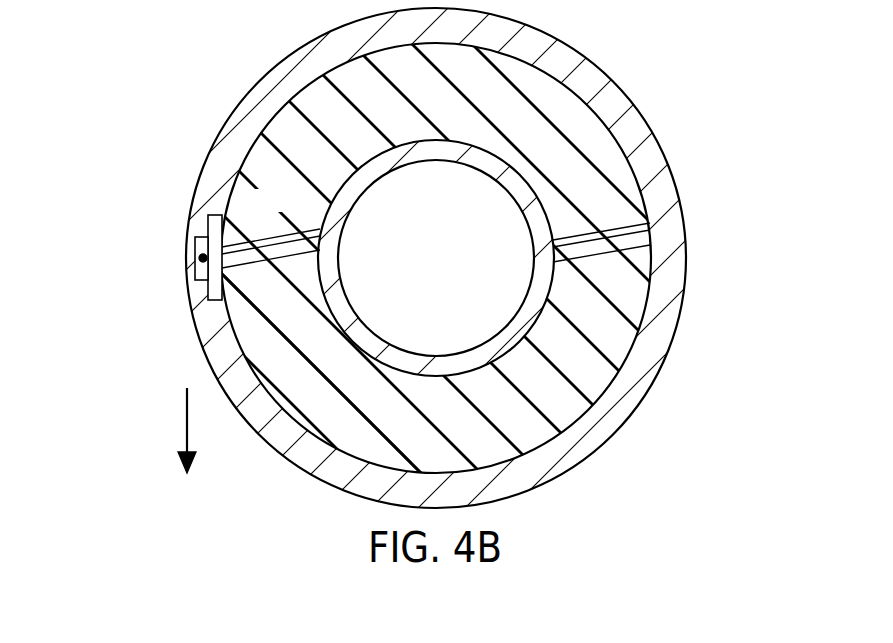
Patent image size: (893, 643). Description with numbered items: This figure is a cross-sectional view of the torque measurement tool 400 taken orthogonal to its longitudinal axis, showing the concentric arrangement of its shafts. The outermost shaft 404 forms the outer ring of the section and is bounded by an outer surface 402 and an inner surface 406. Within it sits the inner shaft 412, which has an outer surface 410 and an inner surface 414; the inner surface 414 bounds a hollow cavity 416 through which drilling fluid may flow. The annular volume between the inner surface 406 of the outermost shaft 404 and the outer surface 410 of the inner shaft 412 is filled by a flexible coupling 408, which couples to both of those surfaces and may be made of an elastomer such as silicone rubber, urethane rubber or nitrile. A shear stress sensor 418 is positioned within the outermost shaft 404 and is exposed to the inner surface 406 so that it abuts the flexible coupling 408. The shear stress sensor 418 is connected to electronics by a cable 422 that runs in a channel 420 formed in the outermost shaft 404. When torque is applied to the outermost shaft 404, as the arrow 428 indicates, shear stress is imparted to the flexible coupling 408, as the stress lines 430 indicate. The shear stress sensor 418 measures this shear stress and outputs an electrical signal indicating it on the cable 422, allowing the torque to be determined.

The torque measurement tool 400 is at (183, 59).
The outer surface 402 is at (687, 258).
The outermost shaft 404 is at (667, 315).
The inner surface 406 is at (632, 353).
The flexible coupling 408 is at (457, 436).
The outer surface 410 is at (318, 271).
The inner shaft 412 is at (330, 313).
The inner surface 414 is at (366, 350).
The hollow cavity 416 is at (457, 270).
The shear stress sensor 418 is at (208, 225).
The channel 420 is at (197, 281).
The cable 422 is at (198, 256).
The arrow 428 is at (185, 423).
The stress lines 430 is at (295, 235).